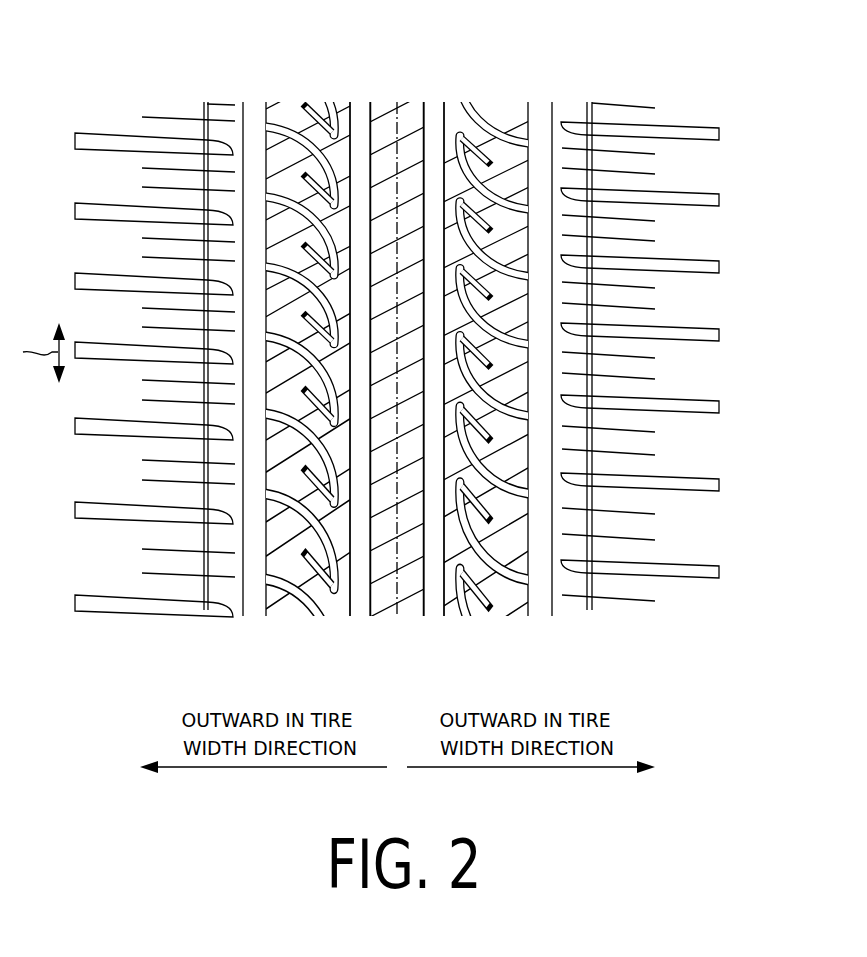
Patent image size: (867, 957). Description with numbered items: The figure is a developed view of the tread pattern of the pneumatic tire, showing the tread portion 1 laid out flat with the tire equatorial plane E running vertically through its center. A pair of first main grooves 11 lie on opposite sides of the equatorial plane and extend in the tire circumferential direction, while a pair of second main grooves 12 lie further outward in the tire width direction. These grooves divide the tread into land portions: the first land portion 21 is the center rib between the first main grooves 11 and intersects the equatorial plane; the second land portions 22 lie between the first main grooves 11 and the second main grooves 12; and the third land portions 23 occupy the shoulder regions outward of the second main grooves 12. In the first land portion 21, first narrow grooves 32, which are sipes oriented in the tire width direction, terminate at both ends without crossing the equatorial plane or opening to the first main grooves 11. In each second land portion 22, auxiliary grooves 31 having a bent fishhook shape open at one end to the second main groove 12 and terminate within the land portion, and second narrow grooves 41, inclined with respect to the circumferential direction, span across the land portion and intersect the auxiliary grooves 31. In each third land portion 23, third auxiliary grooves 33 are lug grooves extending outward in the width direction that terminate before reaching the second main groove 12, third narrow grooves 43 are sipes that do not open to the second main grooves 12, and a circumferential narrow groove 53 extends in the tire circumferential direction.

The tread portion 1 is at (693, 73).
The first main groove 11 is at (356, 106).
The second main groove 12 is at (247, 104).
The first land portion 21 is at (424, 620).
The second land portion 22 is at (350, 620).
The third land portion 23 is at (243, 620).
The auxiliary groove 31 is at (282, 108).
The first narrow groove 32 is at (376, 104).
The third auxiliary groove 33 is at (106, 205).
The second narrow groove 41 is at (331, 106).
The third narrow groove 43 is at (153, 118).
The circumferential narrow groove 53 is at (204, 103).